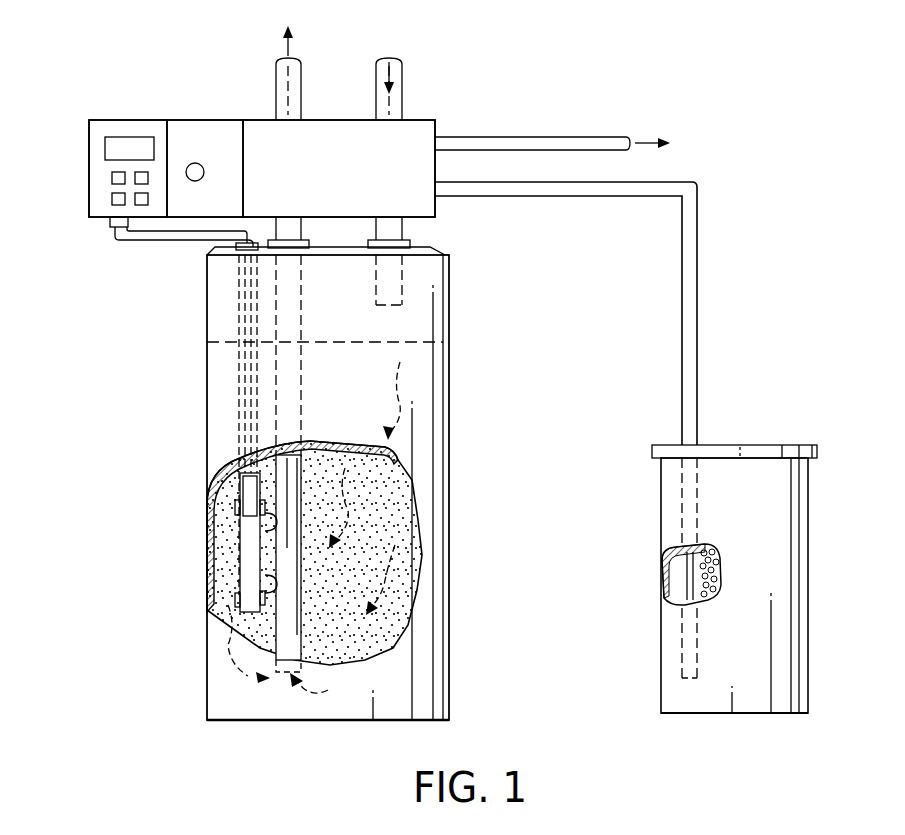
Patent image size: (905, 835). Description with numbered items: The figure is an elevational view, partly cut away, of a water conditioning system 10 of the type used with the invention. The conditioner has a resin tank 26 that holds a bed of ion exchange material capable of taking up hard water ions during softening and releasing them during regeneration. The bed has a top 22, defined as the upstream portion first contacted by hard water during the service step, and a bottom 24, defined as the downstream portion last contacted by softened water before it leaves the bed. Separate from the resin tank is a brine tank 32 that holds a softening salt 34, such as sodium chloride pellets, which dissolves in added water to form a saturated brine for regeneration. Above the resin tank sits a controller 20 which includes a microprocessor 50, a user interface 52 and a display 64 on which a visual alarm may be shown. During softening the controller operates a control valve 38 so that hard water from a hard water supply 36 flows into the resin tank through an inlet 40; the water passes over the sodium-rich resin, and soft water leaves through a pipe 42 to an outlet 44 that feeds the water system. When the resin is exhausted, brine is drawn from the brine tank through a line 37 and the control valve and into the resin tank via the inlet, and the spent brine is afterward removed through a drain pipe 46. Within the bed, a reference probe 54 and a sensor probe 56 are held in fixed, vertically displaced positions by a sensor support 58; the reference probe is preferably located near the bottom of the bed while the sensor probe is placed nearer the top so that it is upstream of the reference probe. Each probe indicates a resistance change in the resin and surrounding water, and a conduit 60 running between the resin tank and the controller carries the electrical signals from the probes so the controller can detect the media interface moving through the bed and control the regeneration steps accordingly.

The water conditioning system 10 is at (84, 100).
The controller 20 is at (158, 135).
The top of bed 22 is at (415, 355).
The bottom of bed 24 is at (398, 688).
The resin tank 26 is at (450, 630).
The brine tank 32 is at (808, 533).
The softening salt 34 is at (720, 585).
The hard water supply 36 is at (403, 91).
The line 37 is at (698, 273).
The control valve 38 is at (430, 131).
The inlet 40 is at (405, 228).
The pipe 42 is at (290, 470).
The outlet 44 is at (301, 72).
The drain pipe 46 is at (575, 137).
The microprocessor 50 is at (208, 130).
The user interface 52 is at (112, 180).
The reference probe 54 is at (262, 577).
The sensor probe 56 is at (262, 525).
The sensor support 58 is at (238, 408).
The conduit 60 is at (186, 245).
The display 64 is at (112, 147).